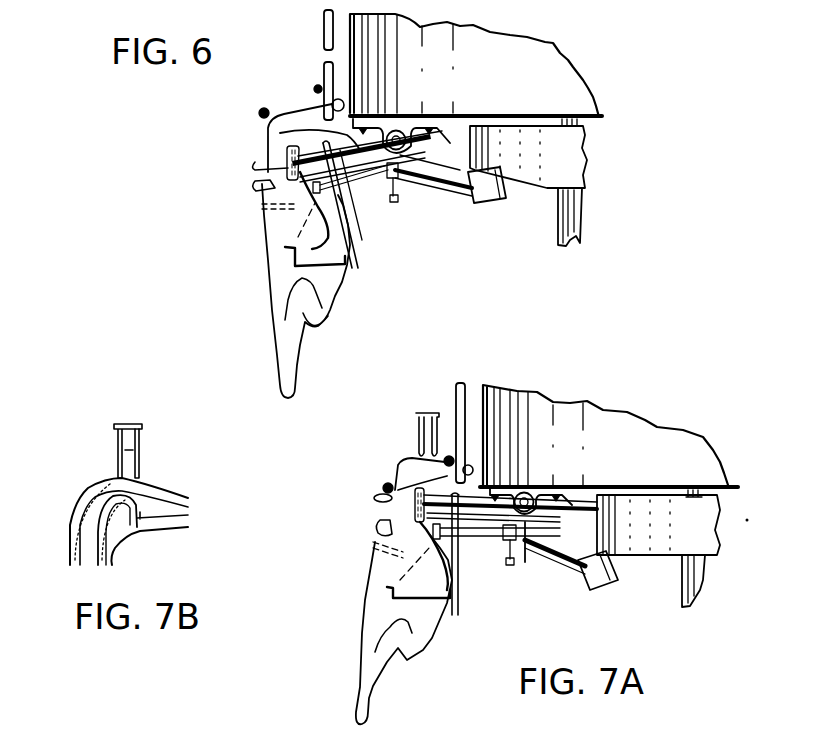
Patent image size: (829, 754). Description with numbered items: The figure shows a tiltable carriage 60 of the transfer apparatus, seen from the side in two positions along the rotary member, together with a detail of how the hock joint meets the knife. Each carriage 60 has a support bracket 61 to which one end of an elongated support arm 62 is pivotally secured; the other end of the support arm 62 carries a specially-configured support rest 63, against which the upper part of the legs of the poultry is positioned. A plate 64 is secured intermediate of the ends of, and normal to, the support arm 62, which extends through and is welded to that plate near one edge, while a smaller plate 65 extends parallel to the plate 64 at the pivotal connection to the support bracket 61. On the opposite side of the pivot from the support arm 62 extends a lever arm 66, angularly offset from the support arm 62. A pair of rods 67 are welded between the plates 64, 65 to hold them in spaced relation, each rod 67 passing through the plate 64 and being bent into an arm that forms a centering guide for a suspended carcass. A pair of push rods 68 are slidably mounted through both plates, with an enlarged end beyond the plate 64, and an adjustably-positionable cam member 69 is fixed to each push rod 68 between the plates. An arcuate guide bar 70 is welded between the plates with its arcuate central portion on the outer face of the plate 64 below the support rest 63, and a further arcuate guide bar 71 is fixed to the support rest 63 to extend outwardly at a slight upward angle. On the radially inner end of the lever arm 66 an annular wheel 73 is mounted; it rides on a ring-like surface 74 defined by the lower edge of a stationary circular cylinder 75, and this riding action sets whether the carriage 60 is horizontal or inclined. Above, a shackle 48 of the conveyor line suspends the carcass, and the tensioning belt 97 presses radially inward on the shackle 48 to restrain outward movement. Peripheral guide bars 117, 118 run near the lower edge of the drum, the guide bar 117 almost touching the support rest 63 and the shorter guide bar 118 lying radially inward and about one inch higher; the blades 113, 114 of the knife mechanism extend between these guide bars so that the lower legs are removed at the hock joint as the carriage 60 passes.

In FIG. 6, the shackle 48 is at (322, 27).
In FIG. 7A, the shackle 48 is at (487, 392).
In FIG. 6, the carriage 60 is at (400, 228).
In FIG. 6, the support bracket 61 is at (398, 113).
In FIG. 6, the support arm 62 is at (286, 132).
In FIG. 6, the support rest 63 is at (258, 184).
In FIG. 7A, the support rest 63 is at (384, 523).
In FIG. 6, the plate 64 is at (358, 272).
In FIG. 6, the smaller plate 65 is at (415, 158).
In FIG. 6, the lever arm 66 is at (460, 198).
In FIG. 6, the rod 67 is at (286, 249).
In FIG. 6, the push rod 68 is at (371, 215).
In FIG. 6, the cam member 69 is at (400, 200).
In FIG. 7A, the cam member 69 is at (514, 568).
In FIG. 6, the arcuate guide bar 70 is at (283, 208).
In FIG. 6, the arcuate guide bar 71 is at (250, 166).
In FIG. 6, the annular wheel 73 is at (490, 206).
In FIG. 6, the ring-like surface 74 is at (470, 162).
In FIG. 6, the stationary circular cylinder 75 is at (584, 176).
In FIG. 6, the tensioning belt 97 is at (311, 20).
In FIG. 7A, the blade 113 is at (418, 433).
In FIG. 7B, the blade 113 is at (114, 447).
In FIG. 7A, the blade 114 is at (440, 440).
In FIG. 7B, the blade 114 is at (144, 448).
In FIG. 6, the peripheral guide bar 117 is at (262, 110).
In FIG. 7A, the peripheral guide bar 117 is at (386, 484).
In FIG. 6, the peripheral guide bar 118 is at (315, 86).
In FIG. 7A, the peripheral guide bar 118 is at (452, 458).